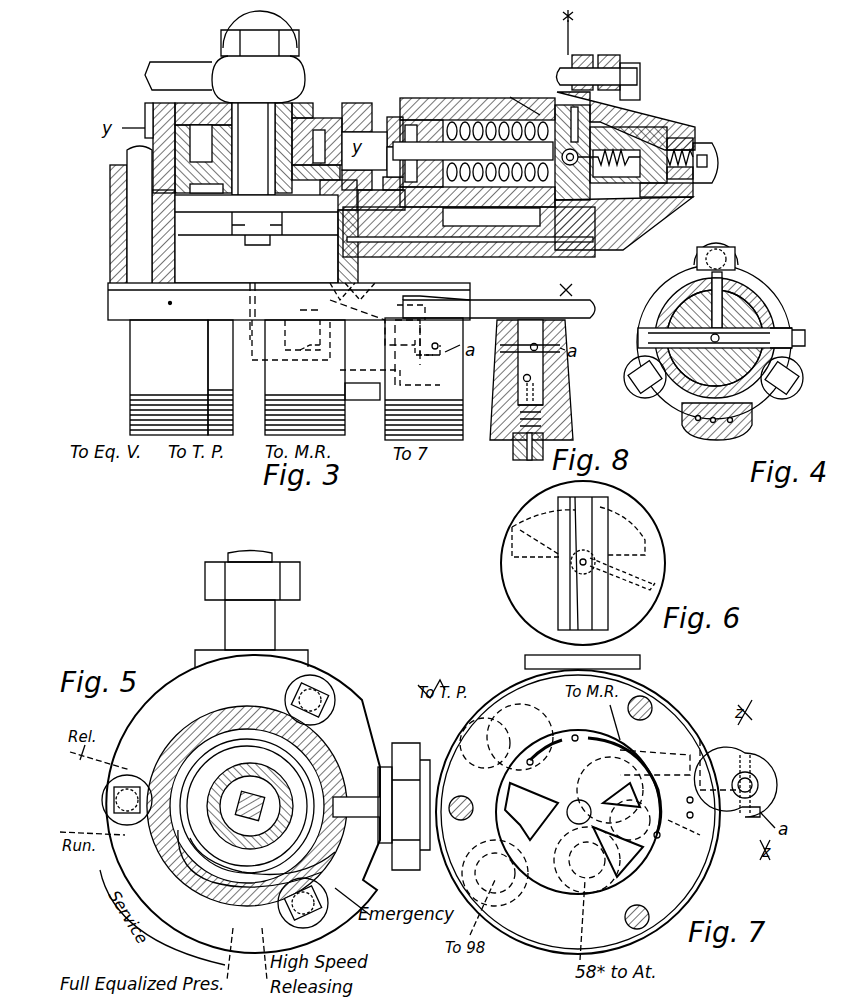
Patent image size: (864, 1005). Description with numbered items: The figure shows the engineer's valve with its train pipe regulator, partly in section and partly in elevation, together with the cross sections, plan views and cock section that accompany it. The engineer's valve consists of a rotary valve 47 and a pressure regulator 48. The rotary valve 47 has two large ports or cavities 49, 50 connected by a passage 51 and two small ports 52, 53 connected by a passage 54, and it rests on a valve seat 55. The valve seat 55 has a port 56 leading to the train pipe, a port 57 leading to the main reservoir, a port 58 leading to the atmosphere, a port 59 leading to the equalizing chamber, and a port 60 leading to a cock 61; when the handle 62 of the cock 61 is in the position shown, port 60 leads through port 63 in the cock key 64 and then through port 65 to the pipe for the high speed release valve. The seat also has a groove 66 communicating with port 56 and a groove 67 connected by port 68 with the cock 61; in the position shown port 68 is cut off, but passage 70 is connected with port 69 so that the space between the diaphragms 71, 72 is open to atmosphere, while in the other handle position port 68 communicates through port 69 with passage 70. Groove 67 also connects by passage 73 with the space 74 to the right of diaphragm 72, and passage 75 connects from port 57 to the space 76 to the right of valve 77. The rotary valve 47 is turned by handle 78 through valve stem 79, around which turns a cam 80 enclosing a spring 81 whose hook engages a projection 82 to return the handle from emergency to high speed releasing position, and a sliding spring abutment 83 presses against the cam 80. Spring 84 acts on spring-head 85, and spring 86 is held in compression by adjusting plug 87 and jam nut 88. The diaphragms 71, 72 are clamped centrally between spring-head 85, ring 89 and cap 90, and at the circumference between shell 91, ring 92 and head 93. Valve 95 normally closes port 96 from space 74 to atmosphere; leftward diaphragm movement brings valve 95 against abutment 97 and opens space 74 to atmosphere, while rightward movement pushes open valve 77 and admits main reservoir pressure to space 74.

In FIG. 3, the rotary valve 47 is at (234, 217).
In FIG. 6, the rotary valve 47 is at (655, 548).
In FIG. 3, the pressure regulator 48 is at (530, 98).
In FIG. 6, the large port or cavity 49 is at (520, 548).
In FIG. 6, the large port or cavity 50 is at (630, 532).
In FIG. 6, the passage 51 is at (553, 527).
In FIG. 6, the small port 52 is at (655, 588).
In FIG. 6, the small port 53 is at (578, 566).
In FIG. 6, the passage 54 is at (640, 575).
In FIG. 3, the valve seat 55 is at (262, 283).
In FIG. 7, the valve seat 55 is at (560, 880).
In FIG. 7, the port 56 is at (531, 811).
In FIG. 7, the port 57 is at (670, 850).
In FIG. 3, the port 58 is at (313, 359).
In FIG. 7, the port 58 is at (598, 838).
In FIG. 7, the port 59 is at (579, 812).
In FIG. 3, the port 60 is at (246, 303).
In FIG. 7, the port 60 is at (578, 736).
In FIG. 8, the cock 61 is at (500, 388).
In FIG. 7, the cock 61 is at (760, 755).
In FIG. 3, the handle 62 is at (497, 303).
In FIG. 3, the port 63 is at (362, 393).
In FIG. 8, the port 63 is at (532, 378).
In FIG. 8, the cock key 64 is at (545, 372).
In FIG. 8, the port 65 is at (518, 448).
In FIG. 7, the groove 66 is at (540, 735).
In FIG. 7, the groove 67 is at (620, 750).
In FIG. 3, the port 68 is at (370, 367).
In FIG. 8, the port 68 is at (505, 360).
In FIG. 7, the port 68 is at (705, 740).
In FIG. 8, the port 69 is at (538, 345).
In FIG. 3, the passage 70 is at (408, 302).
In FIG. 4, the passage 70 is at (698, 422).
In FIG. 7, the passage 70 is at (700, 810).
In FIG. 3, the diaphragm 71 is at (560, 105).
In FIG. 3, the diaphragm 72 is at (620, 115).
In FIG. 3, the passage 73 is at (402, 309).
In FIG. 4, the passage 73 is at (738, 420).
In FIG. 7, the passage 73 is at (695, 825).
In FIG. 3, the space 74 is at (650, 195).
In FIG. 4, the space 74 is at (735, 424).
In FIG. 3, the passage 75 is at (358, 327).
In FIG. 4, the passage 75 is at (715, 424).
In FIG. 7, the passage 75 is at (690, 855).
In FIG. 3, the space 76 is at (715, 172).
In FIG. 3, the valve 77 is at (690, 184).
In FIG. 3, the handle 78 is at (225, 66).
In FIG. 3, the valve stem 79 is at (253, 149).
In FIG. 5, the valve stem 79 is at (225, 775).
In FIG. 3, the cam 80 is at (330, 97).
In FIG. 5, the cam 80 is at (190, 735).
In FIG. 5, the spring 81 is at (238, 738).
In FIG. 5, the projection 82 is at (335, 762).
In FIG. 3, the sliding spring abutment 83 is at (375, 118).
In FIG. 5, the sliding spring abutment 83 is at (355, 797).
In FIG. 3, the spring 84 is at (460, 122).
In FIG. 3, the spring-head 85 is at (560, 200).
In FIG. 3, the spring 86 is at (450, 120).
In FIG. 3, the adjusting plug 87 is at (425, 115).
In FIG. 5, the adjusting plug 87 is at (386, 767).
In FIG. 3, the jam nut 88 is at (405, 100).
In FIG. 5, the jam nut 88 is at (425, 745).
In FIG. 3, the ring 89 is at (590, 210).
In FIG. 3, the cap 90 is at (640, 215).
In FIG. 3, the shell 91 is at (593, 55).
In FIG. 3, the ring 92 is at (640, 80).
In FIG. 3, the head 93 is at (680, 135).
In FIG. 3, the valve 95 is at (575, 205).
In FIG. 3, the port 96 is at (516, 98).
In FIG. 4, the port 96 is at (720, 285).
In FIG. 3, the abutment 97 is at (540, 195).
In FIG. 4, the abutment 97 is at (770, 320).